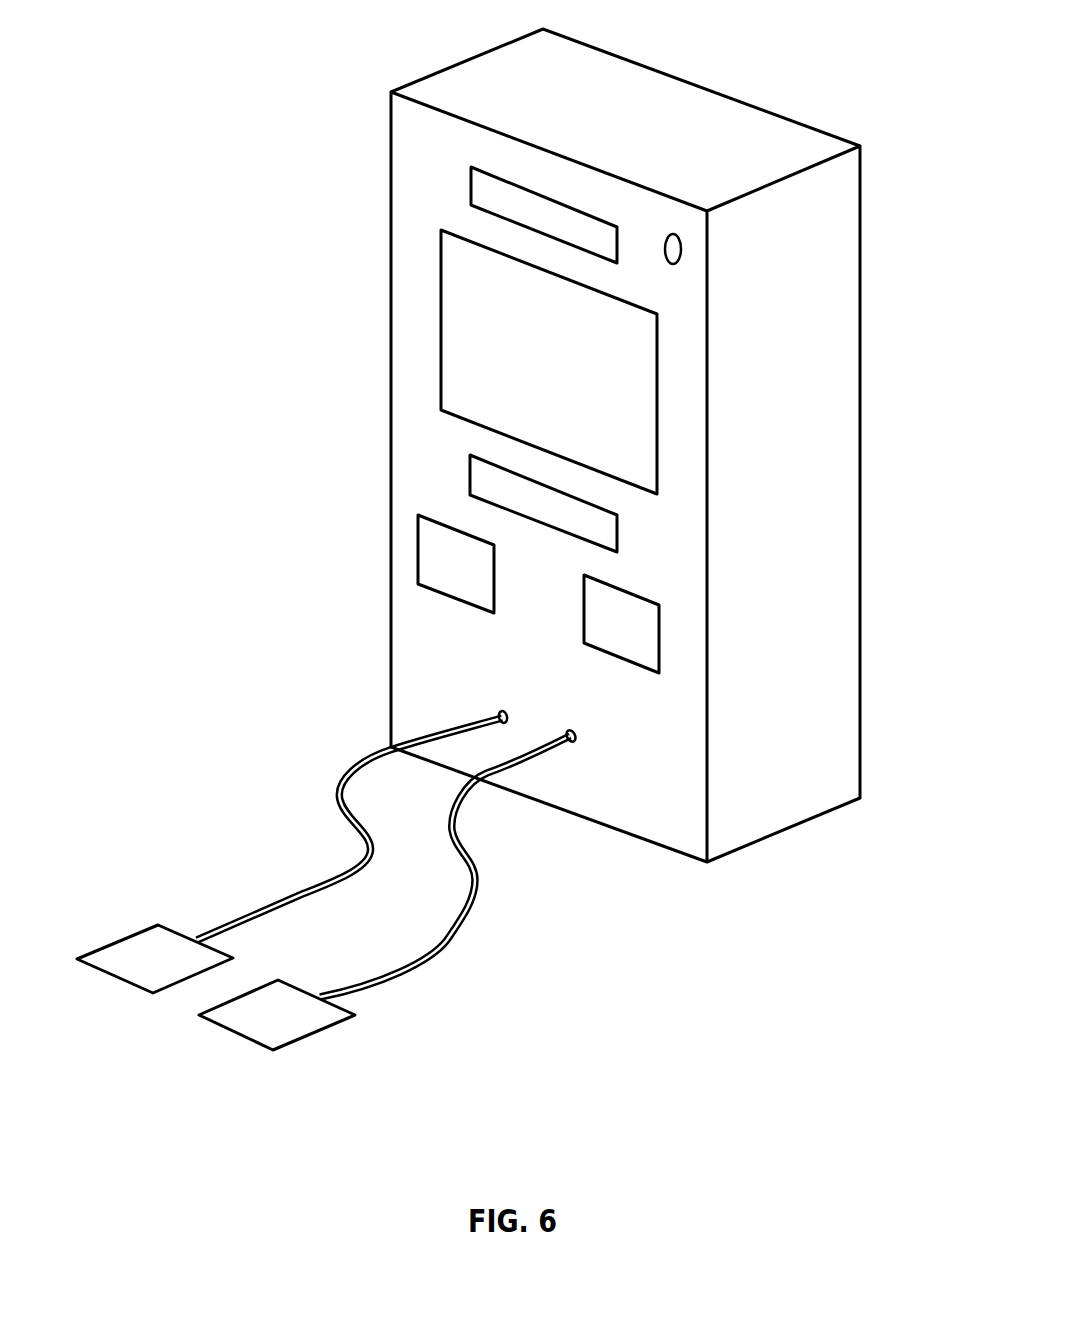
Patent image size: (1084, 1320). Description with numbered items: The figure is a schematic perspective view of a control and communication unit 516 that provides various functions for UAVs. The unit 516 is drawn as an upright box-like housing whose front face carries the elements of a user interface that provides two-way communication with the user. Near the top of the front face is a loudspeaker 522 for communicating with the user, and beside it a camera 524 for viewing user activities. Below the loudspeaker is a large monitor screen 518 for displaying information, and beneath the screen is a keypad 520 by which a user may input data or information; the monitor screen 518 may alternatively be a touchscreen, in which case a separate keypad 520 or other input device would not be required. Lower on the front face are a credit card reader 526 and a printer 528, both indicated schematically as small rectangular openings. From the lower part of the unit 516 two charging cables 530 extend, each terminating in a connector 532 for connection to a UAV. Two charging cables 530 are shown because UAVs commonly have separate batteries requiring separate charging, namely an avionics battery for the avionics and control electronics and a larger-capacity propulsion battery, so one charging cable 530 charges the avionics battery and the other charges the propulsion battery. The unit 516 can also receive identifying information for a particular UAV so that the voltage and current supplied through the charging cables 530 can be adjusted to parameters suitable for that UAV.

The control and communication unit 516 is at (630, 110).
The monitor screen 518 is at (485, 325).
The keypad 520 is at (485, 472).
The loudspeaker 522 is at (485, 193).
The camera 524 is at (683, 250).
The credit card reader 526 is at (438, 552).
The printer 528 is at (603, 625).
The charging cables 530 is at (337, 877).
The connectors 532 is at (128, 945).